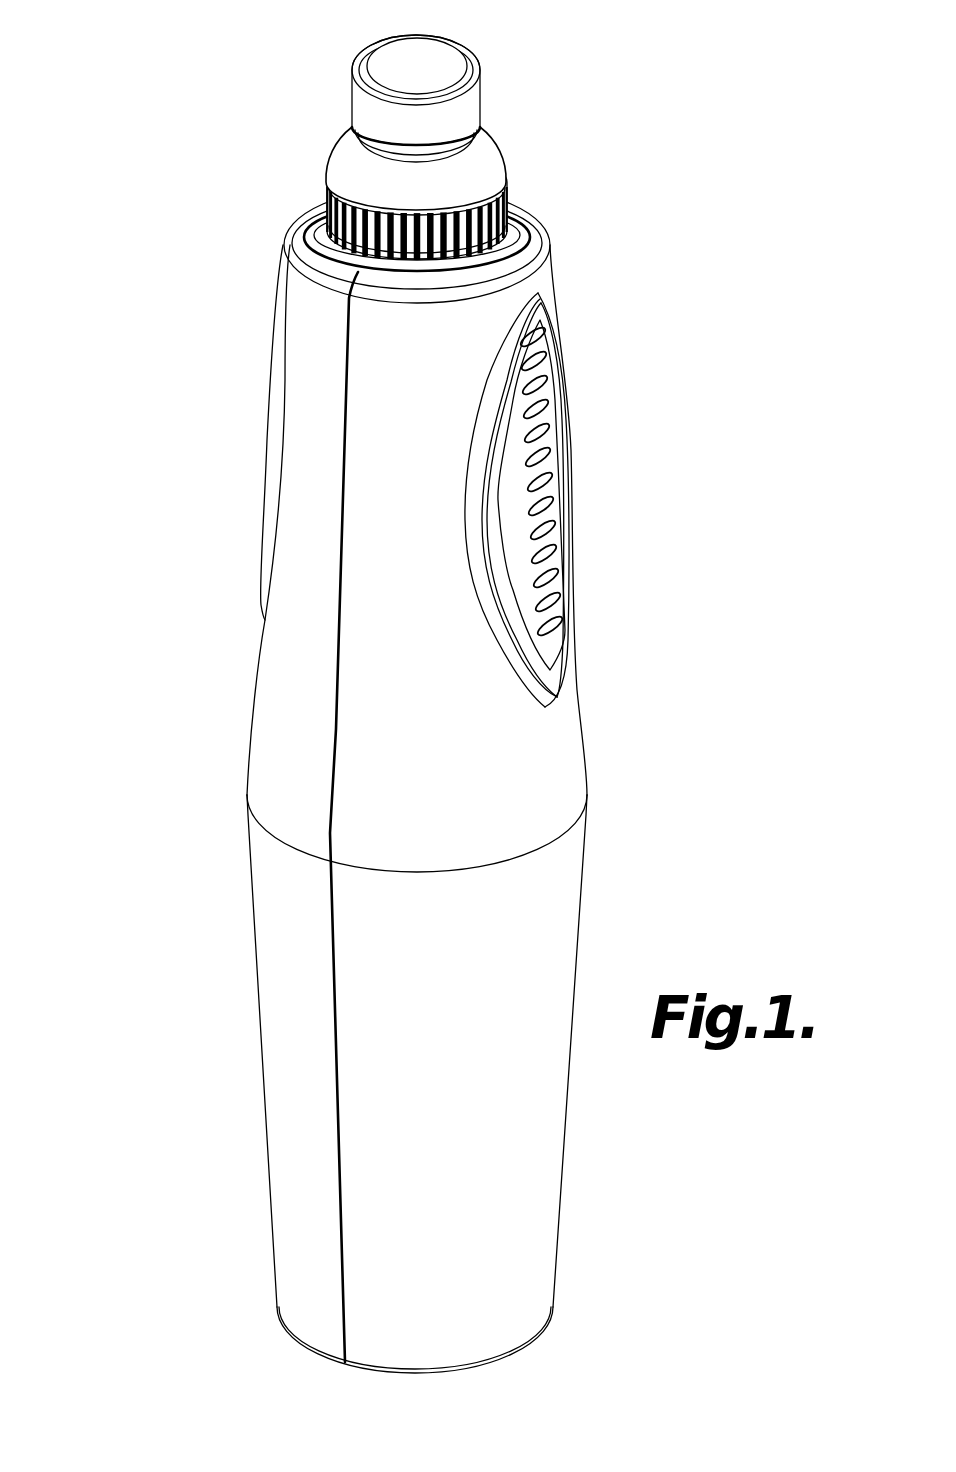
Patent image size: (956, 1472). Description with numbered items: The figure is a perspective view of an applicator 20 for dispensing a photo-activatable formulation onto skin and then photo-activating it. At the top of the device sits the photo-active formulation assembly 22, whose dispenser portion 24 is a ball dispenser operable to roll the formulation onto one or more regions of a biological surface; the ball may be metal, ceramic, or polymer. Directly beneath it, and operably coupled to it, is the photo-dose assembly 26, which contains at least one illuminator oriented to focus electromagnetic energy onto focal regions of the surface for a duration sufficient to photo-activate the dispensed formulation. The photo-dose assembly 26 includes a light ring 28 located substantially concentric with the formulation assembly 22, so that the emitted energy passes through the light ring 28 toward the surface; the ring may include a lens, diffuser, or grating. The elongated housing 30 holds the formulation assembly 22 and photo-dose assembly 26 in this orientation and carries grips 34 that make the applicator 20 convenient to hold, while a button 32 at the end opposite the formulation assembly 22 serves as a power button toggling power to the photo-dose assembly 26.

The applicator 20 is at (148, 262).
The photo-active formulation assembly 22 is at (513, 122).
The dispenser portion 24 is at (433, 46).
The photo-dose assembly 26 is at (305, 188).
The light ring 28 is at (520, 215).
The housing 30 is at (573, 911).
The button 32 is at (330, 1360).
The grips 34 is at (272, 432).